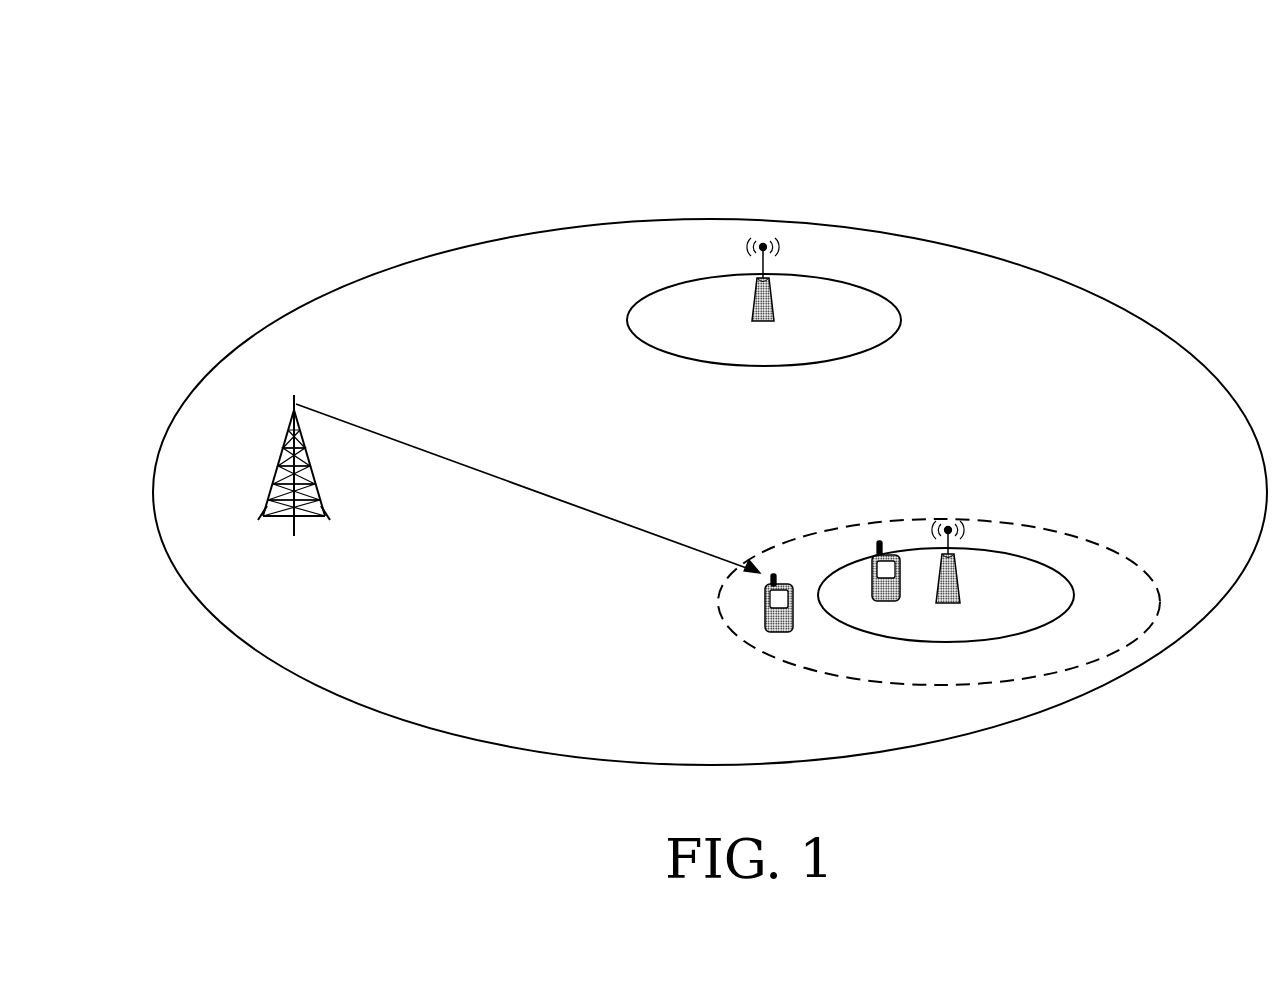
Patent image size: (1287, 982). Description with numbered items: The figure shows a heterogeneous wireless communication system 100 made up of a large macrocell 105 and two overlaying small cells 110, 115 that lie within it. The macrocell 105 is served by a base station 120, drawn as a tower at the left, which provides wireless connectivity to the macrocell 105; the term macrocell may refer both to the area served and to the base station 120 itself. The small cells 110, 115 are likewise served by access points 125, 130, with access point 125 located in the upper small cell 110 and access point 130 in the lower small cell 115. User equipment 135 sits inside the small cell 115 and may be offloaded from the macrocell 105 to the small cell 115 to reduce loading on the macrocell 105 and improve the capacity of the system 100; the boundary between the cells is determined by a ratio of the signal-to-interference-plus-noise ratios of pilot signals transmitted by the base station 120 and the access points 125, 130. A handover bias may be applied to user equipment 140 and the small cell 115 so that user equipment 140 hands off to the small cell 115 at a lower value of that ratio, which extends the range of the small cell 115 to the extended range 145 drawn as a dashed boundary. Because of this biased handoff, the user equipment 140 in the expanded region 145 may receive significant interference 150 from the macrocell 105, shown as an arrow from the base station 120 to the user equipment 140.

The heterogeneous wireless communication system 100 is at (1108, 92).
The macrocell 105 is at (385, 264).
The small cell 110 is at (627, 320).
The small cell 115 is at (1015, 548).
The base station 120 is at (270, 495).
The access point 125 is at (765, 325).
The access point 130 is at (955, 600).
The user equipment 135 is at (890, 602).
The user equipment 140 is at (780, 636).
The extended range 145 is at (820, 530).
The interference 150 is at (496, 474).